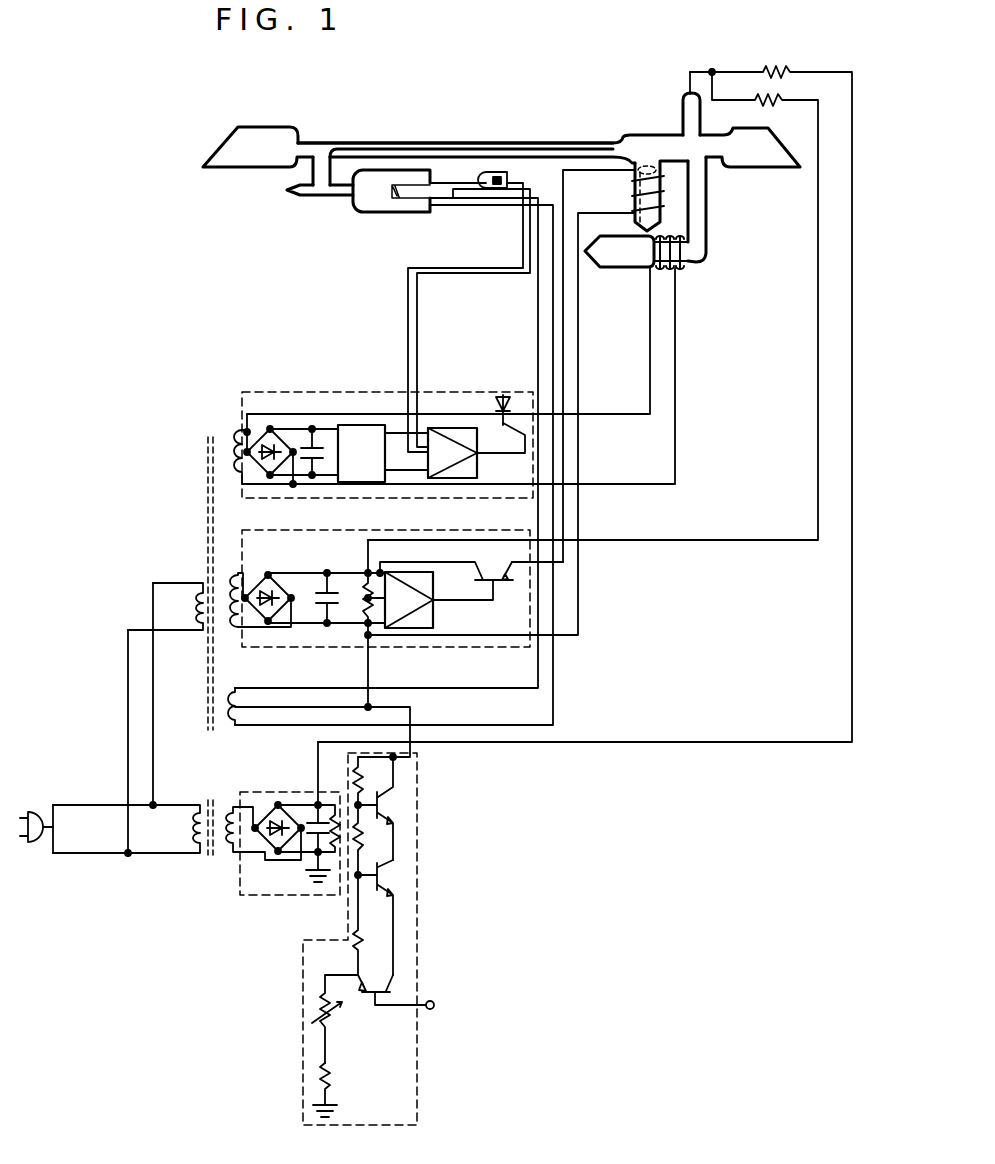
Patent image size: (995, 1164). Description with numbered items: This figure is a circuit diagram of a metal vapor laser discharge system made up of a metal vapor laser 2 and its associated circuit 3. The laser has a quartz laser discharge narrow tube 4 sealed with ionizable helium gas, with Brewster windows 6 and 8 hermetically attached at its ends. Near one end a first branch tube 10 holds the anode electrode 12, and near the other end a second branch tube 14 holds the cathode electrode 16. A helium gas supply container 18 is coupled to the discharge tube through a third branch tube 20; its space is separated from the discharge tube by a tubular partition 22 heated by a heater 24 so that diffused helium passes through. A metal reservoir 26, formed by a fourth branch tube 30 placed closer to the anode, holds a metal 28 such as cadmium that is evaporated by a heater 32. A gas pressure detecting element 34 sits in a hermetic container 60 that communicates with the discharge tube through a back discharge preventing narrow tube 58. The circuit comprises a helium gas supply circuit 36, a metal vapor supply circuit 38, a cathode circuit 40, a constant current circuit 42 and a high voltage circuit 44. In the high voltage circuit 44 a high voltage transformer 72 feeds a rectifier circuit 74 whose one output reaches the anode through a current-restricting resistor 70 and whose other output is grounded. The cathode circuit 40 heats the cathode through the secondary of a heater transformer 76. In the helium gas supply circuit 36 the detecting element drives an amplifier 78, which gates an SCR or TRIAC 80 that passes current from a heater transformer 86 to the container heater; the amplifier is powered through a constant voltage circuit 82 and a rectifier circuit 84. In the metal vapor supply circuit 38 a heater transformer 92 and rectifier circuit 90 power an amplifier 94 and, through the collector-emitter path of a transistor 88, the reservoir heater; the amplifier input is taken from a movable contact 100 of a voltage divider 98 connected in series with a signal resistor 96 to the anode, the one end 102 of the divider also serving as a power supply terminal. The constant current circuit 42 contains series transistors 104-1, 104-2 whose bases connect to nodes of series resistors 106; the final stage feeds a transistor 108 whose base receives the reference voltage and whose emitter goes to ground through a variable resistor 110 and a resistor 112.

The metal vapor laser 2 is at (376, 143).
The metal vapor laser circuit 3 is at (200, 533).
The laser discharge narrow tube 4 is at (489, 143).
The Brewster window 6 is at (229, 141).
The Brewster window 8 is at (785, 151).
The first branch tube 10 is at (685, 100).
The anode electrode 12 is at (700, 112).
The second branch tube 14 is at (316, 196).
The cathode electrode 16 is at (414, 212).
The helium gas supply container 18 is at (615, 263).
The third branch tube 20 is at (706, 190).
The tubular partition 22 is at (650, 270).
The heater 24 is at (673, 269).
The metal reservoir 26 is at (637, 165).
The metal 28 is at (640, 200).
The fourth branch tube 30 is at (664, 229).
The heater 32 is at (634, 183).
The gas pressure detecting element 34 is at (500, 191).
The helium gas supply circuit 36 is at (242, 394).
The metal vapor supply circuit 38 is at (242, 530).
The cathode circuit 40 is at (270, 755).
The constant current circuit 42 is at (418, 930).
The high voltage circuit 44 is at (262, 920).
The back discharge preventing narrow tube 58 is at (452, 183).
The hermetic container 60 is at (505, 175).
The resistor 70 is at (782, 70).
The high voltage transformer 72 is at (202, 856).
The rectifier circuit 74 is at (283, 806).
The heater transformer 76 is at (224, 700).
The amplifier 78 is at (478, 468).
The SCR or TRIAC 80 is at (508, 425).
The constant voltage circuit 82 is at (372, 430).
The rectifier circuit 84 is at (283, 443).
The heater transformer 86 is at (228, 462).
The transistor 88 is at (502, 585).
The rectifier circuit 90 is at (281, 582).
The heater transformer 92 is at (204, 632).
The amplifier 94 is at (433, 620).
The signal resistor 96 is at (780, 99).
The voltage divider 98 is at (366, 582).
The movable contact 100 is at (385, 628).
The one end of voltage divider 102 is at (365, 637).
The transistor 104-1 is at (395, 808).
The transistor 104-2 is at (395, 877).
The resistors 106 is at (363, 833).
The transistor 108 is at (372, 996).
The variable resistor 110 is at (318, 1010).
The resistor 112 is at (331, 1079).